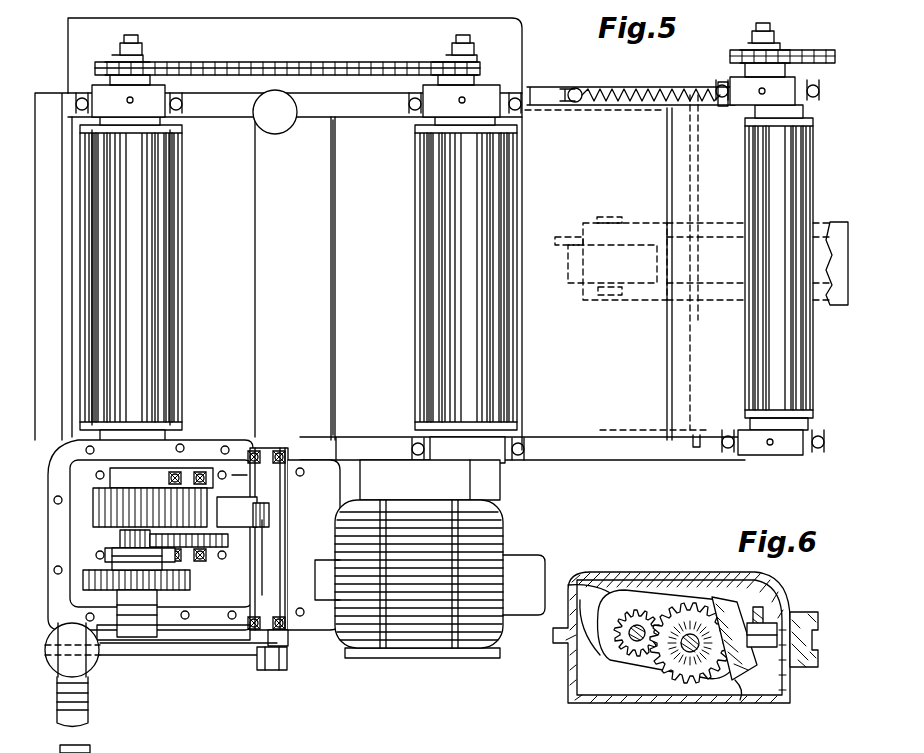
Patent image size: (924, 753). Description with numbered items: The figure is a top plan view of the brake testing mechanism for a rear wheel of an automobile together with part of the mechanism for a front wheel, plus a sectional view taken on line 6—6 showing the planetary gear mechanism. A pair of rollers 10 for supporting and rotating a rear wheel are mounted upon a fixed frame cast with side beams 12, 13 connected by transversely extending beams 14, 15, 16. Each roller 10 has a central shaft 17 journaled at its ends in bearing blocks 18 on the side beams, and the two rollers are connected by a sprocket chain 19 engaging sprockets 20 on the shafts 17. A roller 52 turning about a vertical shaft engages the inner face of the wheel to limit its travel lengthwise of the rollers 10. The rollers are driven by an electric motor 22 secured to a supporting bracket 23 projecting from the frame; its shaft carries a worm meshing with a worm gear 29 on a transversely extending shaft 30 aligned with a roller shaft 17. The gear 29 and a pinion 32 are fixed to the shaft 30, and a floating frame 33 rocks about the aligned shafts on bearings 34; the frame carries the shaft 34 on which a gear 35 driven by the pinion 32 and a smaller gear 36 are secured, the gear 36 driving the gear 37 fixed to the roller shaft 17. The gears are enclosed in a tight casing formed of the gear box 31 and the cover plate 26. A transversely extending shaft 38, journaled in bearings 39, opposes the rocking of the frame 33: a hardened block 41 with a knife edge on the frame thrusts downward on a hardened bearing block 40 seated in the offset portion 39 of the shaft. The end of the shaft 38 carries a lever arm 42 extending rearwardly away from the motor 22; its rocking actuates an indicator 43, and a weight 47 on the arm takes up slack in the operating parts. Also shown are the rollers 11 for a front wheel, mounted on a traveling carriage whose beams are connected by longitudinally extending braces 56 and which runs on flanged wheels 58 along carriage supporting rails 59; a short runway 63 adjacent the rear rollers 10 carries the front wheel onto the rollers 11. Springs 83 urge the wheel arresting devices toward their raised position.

In FIG. 5, the section line 6- 6 is at (66, 534).
In FIG. 5, the roller 10 is at (180, 250).
In FIG. 5, the roller 11 is at (812, 168).
In FIG. 5, the side beam 12 is at (363, 98).
In FIG. 5, the side beam 13 is at (373, 433).
In FIG. 5, the transversely extending beam 14 is at (58, 322).
In FIG. 5, the transversely extending beam 15 is at (262, 323).
In FIG. 5, the transversely extending beam 16 is at (525, 367).
In FIG. 5, the central shaft 17 is at (122, 40).
In FIG. 5, the bearing block 18 is at (170, 110).
In FIG. 5, the sprocket chain 19 is at (292, 65).
In FIG. 5, the sprocket 20 is at (150, 62).
In FIG. 5, the electric motor 22 is at (445, 553).
In FIG. 5, the supporting bracket 23 is at (500, 497).
In FIG. 6, the cover plate 26 is at (625, 572).
In FIG. 5, the worm gear 29 is at (190, 582).
In FIG. 5, the transversely extending shaft 30 is at (150, 615).
In FIG. 6, the transversely extending shaft 30 is at (636, 633).
In FIG. 5, the gear box 31 is at (65, 465).
In FIG. 6, the gear box 31 is at (570, 680).
In FIG. 5, the pinion 32 is at (100, 500).
In FIG. 6, the pinion 32 is at (645, 628).
In FIG. 5, the floating frame 33 is at (240, 488).
In FIG. 5, the transversely extending shaft 34 is at (160, 470).
In FIG. 6, the transversely extending shaft 34 is at (688, 650).
In FIG. 5, the gear 35 is at (250, 545).
In FIG. 6, the gear 35 is at (700, 670).
In FIG. 5, the smaller gear 36 is at (209, 522).
In FIG. 6, the smaller gear 36 is at (712, 614).
In FIG. 6, the gear 37 is at (599, 650).
In FIG. 5, the transversely extending shaft 38 is at (268, 478).
In FIG. 6, the transversely extending shaft 38 is at (780, 625).
In FIG. 5, the bearing 39 is at (280, 455).
In FIG. 6, the bearing 39 is at (745, 655).
In FIG. 6, the bearing block 40 is at (795, 667).
In FIG. 6, the hardened block 41 is at (759, 613).
In FIG. 5, the lever arm 42 is at (228, 660).
In FIG. 5, the indicator 43 is at (92, 710).
In FIG. 5, the weight 47 is at (95, 668).
In FIG. 5, the roller 52 is at (272, 120).
In FIG. 5, the longitudinally extending brace 56 is at (820, 460).
In FIG. 5, the flanged wheel 58 is at (570, 237).
In FIG. 5, the carriage supporting rail 59 is at (825, 305).
In FIG. 5, the runway 63 is at (722, 80).
In FIG. 5, the spring 83 is at (630, 92).
In FIG. 6, the spring 83 is at (735, 680).